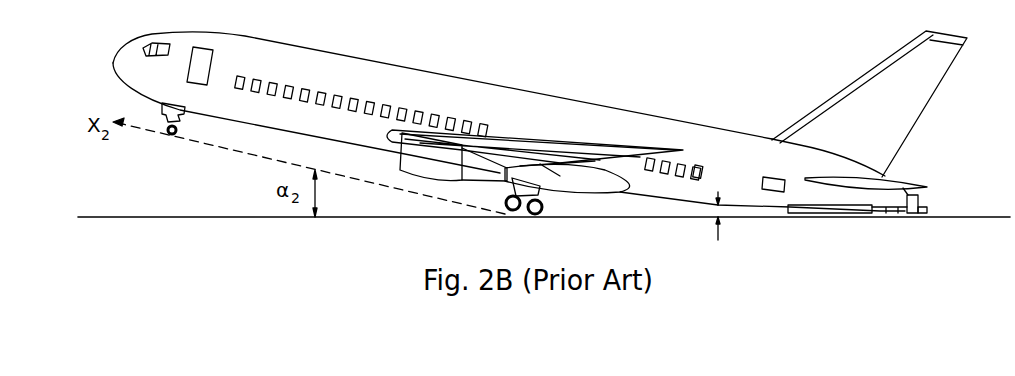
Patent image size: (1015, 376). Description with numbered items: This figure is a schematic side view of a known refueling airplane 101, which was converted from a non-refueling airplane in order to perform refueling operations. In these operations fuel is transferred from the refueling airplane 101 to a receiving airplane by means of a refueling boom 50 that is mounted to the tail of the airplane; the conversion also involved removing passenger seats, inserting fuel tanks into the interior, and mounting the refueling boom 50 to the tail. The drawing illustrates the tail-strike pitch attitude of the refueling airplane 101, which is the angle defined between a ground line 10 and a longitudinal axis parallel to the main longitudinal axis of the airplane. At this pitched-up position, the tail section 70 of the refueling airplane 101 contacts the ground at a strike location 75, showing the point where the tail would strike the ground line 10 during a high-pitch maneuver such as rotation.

The refueling airplane 101 is at (703, 73).
The ground line 10 is at (188, 213).
The strike location 75 is at (722, 213).
The tail section 70 is at (790, 192).
The refueling boom 50 is at (900, 213).